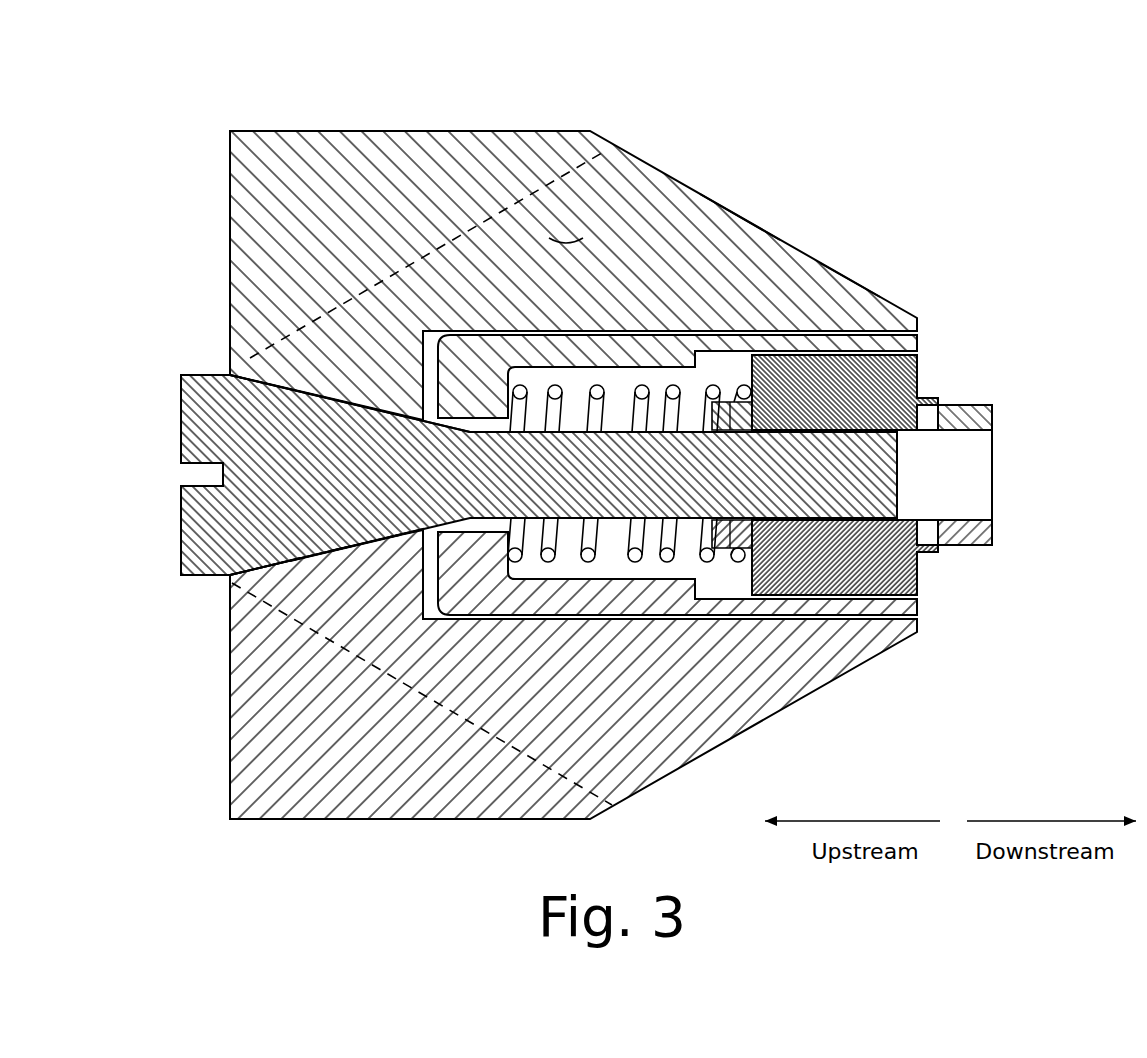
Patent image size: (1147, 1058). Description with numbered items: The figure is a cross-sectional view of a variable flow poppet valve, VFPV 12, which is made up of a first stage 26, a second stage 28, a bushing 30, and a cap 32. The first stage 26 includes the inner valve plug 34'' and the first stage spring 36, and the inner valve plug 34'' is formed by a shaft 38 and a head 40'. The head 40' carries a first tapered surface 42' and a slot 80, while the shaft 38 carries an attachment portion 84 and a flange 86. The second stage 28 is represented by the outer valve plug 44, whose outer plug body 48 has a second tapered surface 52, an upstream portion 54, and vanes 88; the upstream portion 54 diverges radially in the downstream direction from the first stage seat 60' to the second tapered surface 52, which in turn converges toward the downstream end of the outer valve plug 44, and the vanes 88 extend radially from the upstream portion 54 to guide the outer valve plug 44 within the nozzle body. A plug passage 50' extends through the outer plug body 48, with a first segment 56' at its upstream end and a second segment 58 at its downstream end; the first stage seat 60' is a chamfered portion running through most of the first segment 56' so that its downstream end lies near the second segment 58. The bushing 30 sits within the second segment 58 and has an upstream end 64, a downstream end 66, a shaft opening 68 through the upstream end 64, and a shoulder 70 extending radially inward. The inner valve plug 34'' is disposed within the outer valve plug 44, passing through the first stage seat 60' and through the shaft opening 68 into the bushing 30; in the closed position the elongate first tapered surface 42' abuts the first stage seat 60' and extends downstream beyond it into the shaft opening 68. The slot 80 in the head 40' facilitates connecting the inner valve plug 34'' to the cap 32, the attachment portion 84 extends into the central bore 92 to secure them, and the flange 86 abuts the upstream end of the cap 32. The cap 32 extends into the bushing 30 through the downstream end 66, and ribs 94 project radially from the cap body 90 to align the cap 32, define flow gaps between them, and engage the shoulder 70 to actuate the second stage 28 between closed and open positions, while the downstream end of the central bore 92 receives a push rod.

The VFPV 12 is at (601, 462).
The second stage 28 is at (663, 143).
The vanes 88 is at (425, 153).
The shaft 38 is at (568, 460).
The head 40' is at (172, 379).
The slot 80 is at (203, 475).
The inner valve plug 34'' is at (350, 246).
The upstream portion 54 is at (313, 321).
The outer plug body 48 is at (566, 236).
The outer valve plug 44 is at (740, 213).
The second tapered surface 52 is at (847, 280).
The downstream end 66 is at (900, 342).
The upstream end 64 is at (472, 363).
The bushing 30 is at (675, 600).
The shaft opening 68 is at (463, 535).
The shoulder 70 is at (730, 600).
The cap body 90 is at (893, 632).
The second segment 58 is at (770, 620).
The plug passage 50' is at (473, 747).
The first stage spring 36 is at (588, 562).
The flange 86 is at (729, 402).
The ribs 94 is at (888, 372).
The attachment portion 84 is at (848, 466).
The central bore 92 is at (967, 503).
The cap 32 is at (920, 570).
The first stage seat 60' is at (215, 610).
The first tapered surface 42' is at (274, 646).
The first segment 56' is at (338, 720).
The first stage 26 is at (398, 552).